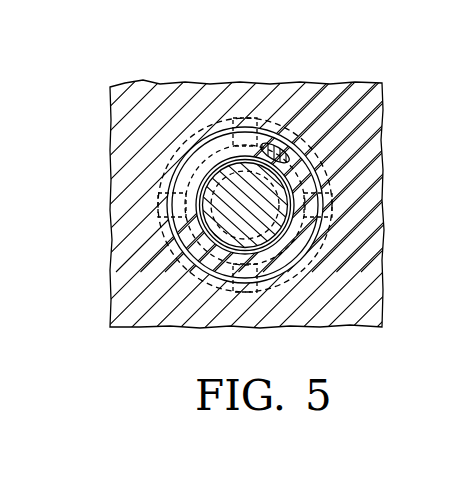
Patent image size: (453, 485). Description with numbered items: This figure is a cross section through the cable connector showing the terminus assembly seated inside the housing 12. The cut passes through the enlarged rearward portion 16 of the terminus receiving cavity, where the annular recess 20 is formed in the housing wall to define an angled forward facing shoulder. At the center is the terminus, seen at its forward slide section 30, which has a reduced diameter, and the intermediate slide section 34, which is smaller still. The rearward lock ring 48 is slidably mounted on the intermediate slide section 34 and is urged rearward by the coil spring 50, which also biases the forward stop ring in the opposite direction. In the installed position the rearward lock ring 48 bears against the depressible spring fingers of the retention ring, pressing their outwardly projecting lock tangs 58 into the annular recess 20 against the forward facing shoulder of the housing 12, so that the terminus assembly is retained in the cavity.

The housing 12 is at (133, 88).
The enlarged rearward portion 16 is at (140, 327).
The annular recess 20 is at (325, 157).
The forward slide section 30 is at (272, 207).
The intermediate slide section 34 is at (320, 171).
The rearward lock ring 48 is at (300, 243).
The coil spring 50 is at (193, 225).
The lock tangs 58 is at (240, 118).